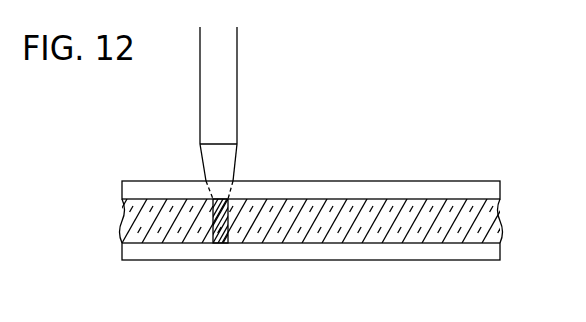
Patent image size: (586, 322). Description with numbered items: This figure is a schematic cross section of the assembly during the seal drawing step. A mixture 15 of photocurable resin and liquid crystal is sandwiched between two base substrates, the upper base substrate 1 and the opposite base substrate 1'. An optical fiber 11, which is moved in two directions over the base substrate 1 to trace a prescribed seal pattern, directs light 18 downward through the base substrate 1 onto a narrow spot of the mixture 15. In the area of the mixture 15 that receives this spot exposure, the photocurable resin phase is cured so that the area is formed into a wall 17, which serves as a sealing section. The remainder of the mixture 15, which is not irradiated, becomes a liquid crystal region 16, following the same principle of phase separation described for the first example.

The optical fiber 11 is at (236, 80).
The light 18 is at (228, 157).
The base substrate 1 is at (340, 178).
The base substrate 1' is at (343, 244).
The mixture 15 is at (493, 224).
The liquid crystal region 16 is at (338, 215).
The wall 17 is at (228, 228).